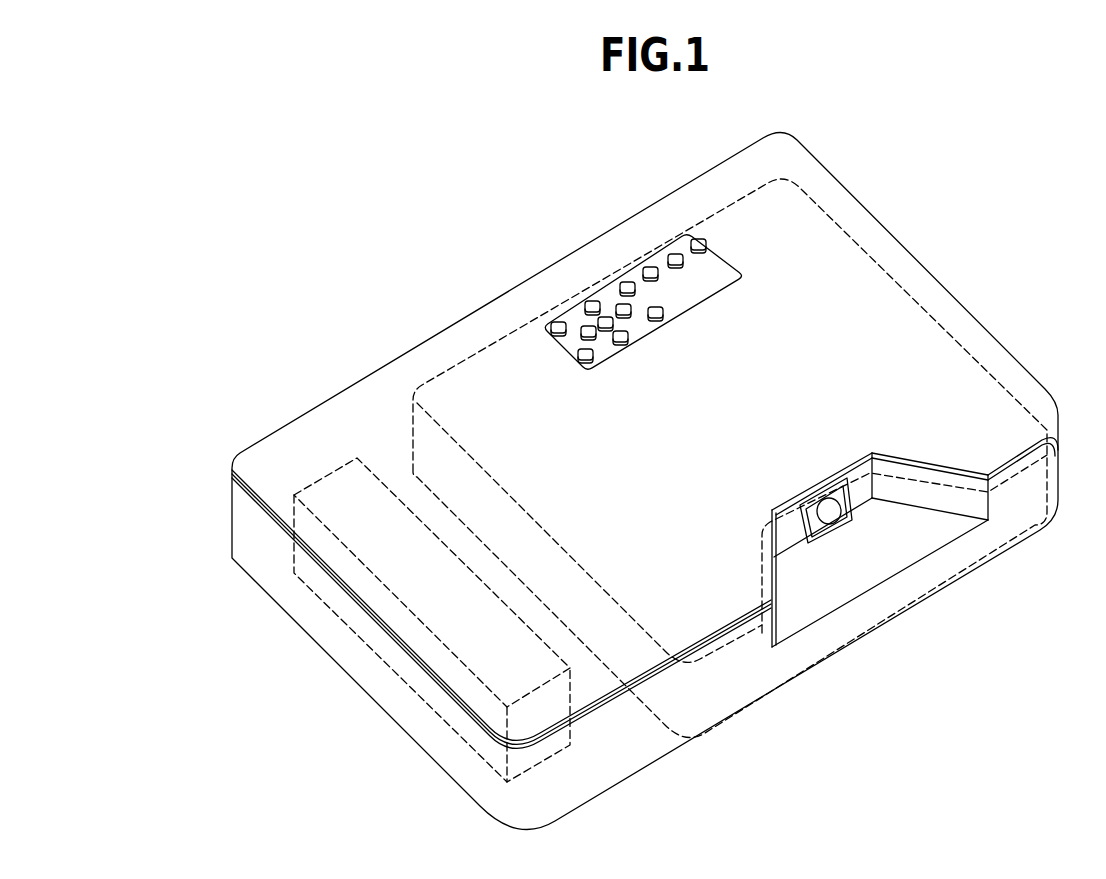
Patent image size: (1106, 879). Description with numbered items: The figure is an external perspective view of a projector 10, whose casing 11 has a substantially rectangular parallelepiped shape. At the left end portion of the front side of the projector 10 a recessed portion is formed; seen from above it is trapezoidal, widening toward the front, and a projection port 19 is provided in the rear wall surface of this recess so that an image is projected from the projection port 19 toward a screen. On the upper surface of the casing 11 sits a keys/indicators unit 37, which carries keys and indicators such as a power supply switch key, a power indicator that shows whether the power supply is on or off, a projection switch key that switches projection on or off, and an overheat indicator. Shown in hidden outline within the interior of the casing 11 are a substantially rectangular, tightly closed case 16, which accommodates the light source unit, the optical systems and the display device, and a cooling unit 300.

The projector 10 is at (920, 198).
The casing 11 is at (388, 396).
The case 16 is at (993, 377).
The projection port 19 is at (828, 508).
The keys/indicators unit 37 is at (697, 240).
The cooling unit 300 is at (432, 707).